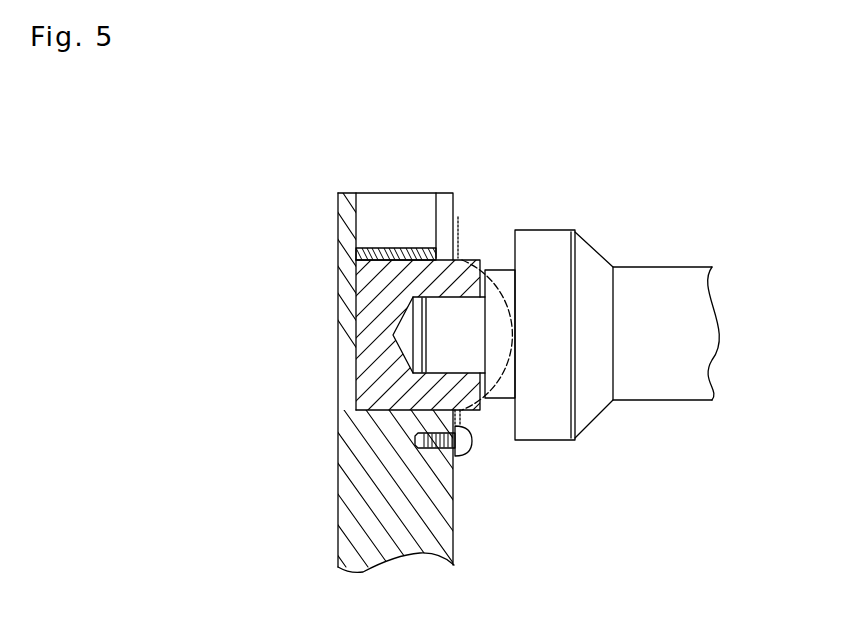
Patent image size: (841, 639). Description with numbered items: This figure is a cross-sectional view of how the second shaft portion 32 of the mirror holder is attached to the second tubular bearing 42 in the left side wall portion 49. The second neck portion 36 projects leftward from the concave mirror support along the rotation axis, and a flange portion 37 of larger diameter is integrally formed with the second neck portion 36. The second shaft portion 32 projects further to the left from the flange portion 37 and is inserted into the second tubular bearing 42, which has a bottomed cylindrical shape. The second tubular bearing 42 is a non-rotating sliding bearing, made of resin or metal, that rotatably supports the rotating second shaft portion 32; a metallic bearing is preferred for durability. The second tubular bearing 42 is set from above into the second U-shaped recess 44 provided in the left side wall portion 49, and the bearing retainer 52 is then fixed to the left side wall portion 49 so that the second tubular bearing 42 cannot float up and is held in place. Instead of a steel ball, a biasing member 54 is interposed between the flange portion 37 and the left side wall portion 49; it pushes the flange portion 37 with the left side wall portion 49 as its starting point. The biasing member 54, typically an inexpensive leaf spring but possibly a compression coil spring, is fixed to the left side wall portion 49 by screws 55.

The second shaft portion 32 is at (453, 338).
The second neck portion 36 is at (653, 278).
The flange portion 37 is at (543, 240).
The second tubular bearing 42 is at (372, 302).
The second U-shaped recess 44 is at (356, 217).
The left side wall portion 49 is at (350, 518).
The bearing retainer 52 is at (415, 247).
The biasing member 54 is at (513, 373).
The screws 55 is at (472, 441).